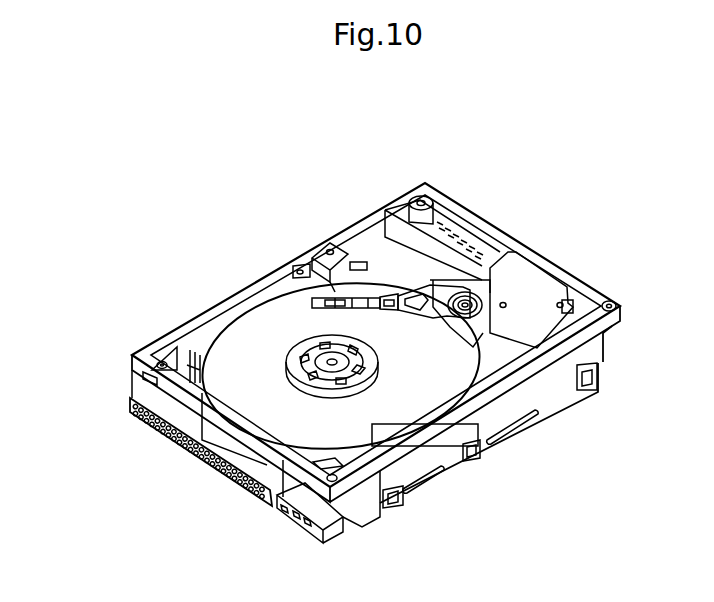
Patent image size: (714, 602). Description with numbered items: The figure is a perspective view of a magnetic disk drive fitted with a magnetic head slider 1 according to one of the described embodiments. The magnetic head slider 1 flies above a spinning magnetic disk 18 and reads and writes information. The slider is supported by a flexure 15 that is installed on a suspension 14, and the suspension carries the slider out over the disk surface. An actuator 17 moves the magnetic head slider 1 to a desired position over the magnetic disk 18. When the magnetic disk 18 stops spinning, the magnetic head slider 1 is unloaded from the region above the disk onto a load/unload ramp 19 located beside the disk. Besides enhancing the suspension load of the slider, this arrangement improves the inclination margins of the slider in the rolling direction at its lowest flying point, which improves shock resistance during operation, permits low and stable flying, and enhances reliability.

The magnetic head slider 1 is at (323, 312).
The suspension 14 is at (340, 297).
The flexure 15 is at (312, 304).
The actuator 17 is at (533, 296).
The magnetic disk 18 is at (405, 396).
The load/unload ramp 19 is at (357, 262).